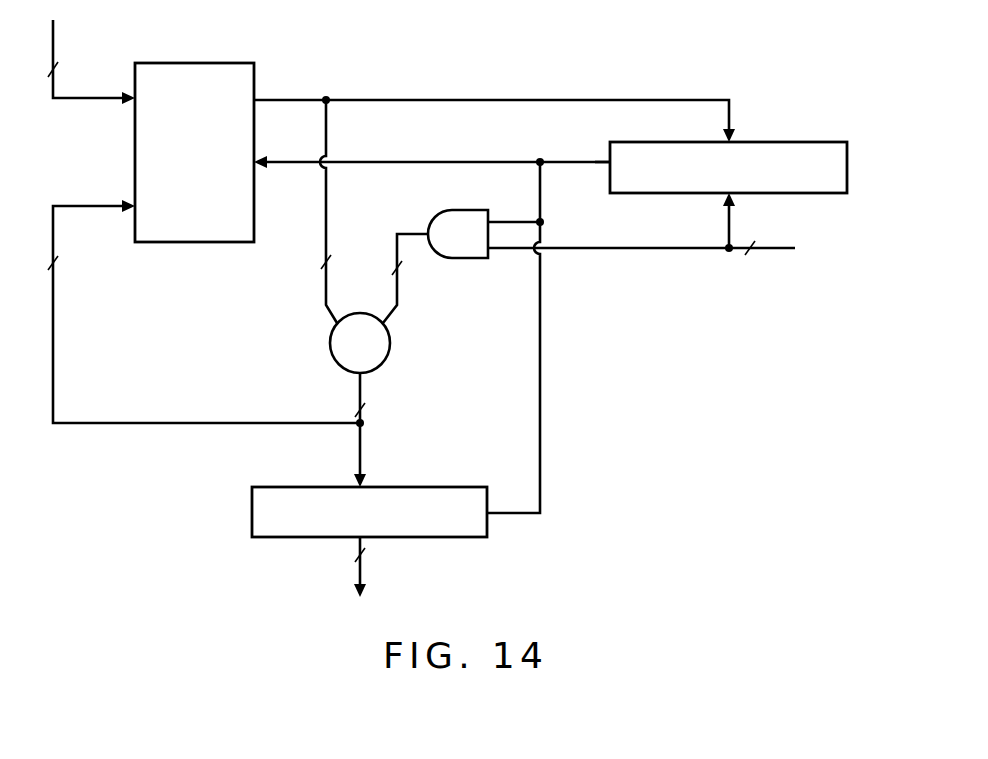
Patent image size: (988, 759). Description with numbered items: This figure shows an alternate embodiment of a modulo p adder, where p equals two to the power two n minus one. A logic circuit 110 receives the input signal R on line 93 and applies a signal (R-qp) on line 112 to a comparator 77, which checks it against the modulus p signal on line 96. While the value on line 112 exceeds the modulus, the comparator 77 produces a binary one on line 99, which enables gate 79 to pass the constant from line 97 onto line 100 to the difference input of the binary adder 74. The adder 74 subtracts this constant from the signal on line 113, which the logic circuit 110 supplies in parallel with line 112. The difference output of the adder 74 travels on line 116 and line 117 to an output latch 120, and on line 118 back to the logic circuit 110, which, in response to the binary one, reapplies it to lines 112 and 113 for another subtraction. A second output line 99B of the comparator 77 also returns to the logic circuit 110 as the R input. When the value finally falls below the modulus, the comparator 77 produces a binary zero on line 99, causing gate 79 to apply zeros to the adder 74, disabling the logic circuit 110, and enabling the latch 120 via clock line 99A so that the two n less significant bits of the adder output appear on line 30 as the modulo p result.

The logic circuit 110 is at (232, 63).
The line 93 is at (95, 100).
The line 112 is at (405, 100).
The R feedback line to logic circuit 99B is at (420, 162).
The comparator 77 is at (817, 142).
The line 99 is at (600, 165).
The line 96 is at (729, 210).
The line 97 is at (660, 252).
The gate 79 is at (478, 258).
The line 100 is at (418, 234).
The line 113 is at (326, 232).
The binary adder 74 is at (385, 356).
The adder output line 116 is at (358, 396).
The output latch input line 117 is at (358, 462).
The line 118 is at (228, 423).
The output latch 120 is at (462, 487).
The clock line 99A is at (540, 462).
The line 30 is at (358, 576).